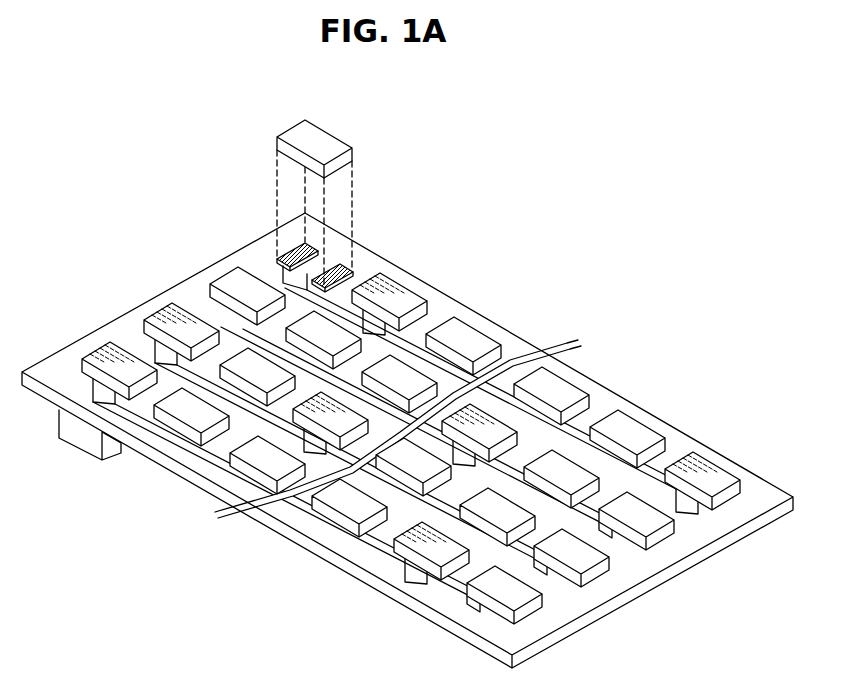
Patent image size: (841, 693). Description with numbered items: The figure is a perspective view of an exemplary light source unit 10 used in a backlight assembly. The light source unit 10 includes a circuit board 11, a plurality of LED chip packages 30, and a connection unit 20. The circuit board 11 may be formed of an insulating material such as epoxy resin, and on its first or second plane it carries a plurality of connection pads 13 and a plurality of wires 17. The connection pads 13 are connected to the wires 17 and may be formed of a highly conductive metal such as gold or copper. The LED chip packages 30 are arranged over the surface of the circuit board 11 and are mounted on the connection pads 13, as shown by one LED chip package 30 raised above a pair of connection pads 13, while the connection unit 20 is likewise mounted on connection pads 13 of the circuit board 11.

The light source unit 10 is at (688, 137).
The circuit board 11 is at (575, 598).
The connection pads 13 is at (294, 248).
The wires 17 is at (553, 580).
The connection unit 20 is at (87, 432).
The LED chip packages 30 is at (341, 131).